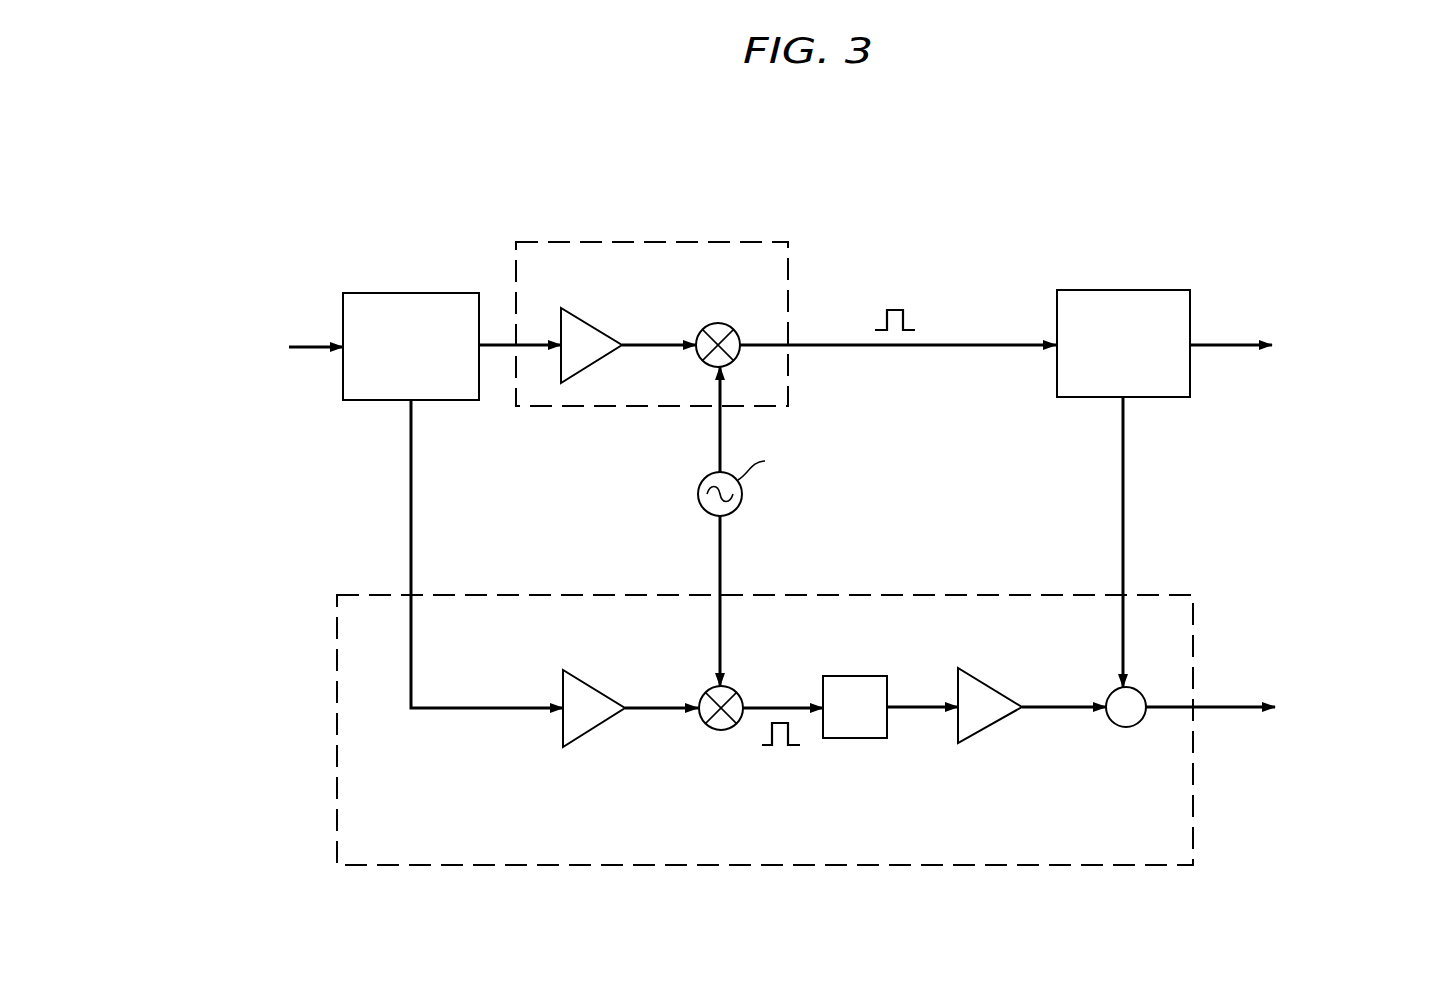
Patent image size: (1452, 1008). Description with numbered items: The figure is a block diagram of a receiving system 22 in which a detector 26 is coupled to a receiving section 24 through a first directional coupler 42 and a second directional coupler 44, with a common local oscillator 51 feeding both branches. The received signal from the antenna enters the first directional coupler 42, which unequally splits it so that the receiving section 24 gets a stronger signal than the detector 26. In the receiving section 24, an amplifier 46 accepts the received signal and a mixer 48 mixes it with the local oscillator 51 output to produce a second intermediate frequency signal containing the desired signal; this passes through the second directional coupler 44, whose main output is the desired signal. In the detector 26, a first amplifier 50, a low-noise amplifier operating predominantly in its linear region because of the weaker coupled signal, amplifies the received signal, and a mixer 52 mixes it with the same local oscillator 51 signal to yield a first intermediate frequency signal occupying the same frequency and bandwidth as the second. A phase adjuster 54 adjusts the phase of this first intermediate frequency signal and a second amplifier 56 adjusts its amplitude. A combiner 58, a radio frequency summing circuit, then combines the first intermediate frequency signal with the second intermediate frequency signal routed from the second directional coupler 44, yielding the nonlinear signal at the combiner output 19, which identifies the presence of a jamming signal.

The combiner output 19 is at (1227, 704).
The receiving system 22 is at (827, 134).
The receiving section 24 is at (648, 242).
The detector 26 is at (766, 866).
The first directional coupler 42 is at (410, 293).
The second directional coupler 44 is at (1121, 290).
The amplifier 46 is at (594, 326).
The mixer 48 is at (703, 361).
The first amplifier 50 is at (598, 690).
The local oscillator 51 is at (740, 507).
The mixer 52 is at (740, 692).
The phase adjuster 54 is at (853, 676).
The second amplifier 56 is at (993, 685).
The combiner 58 is at (1108, 723).